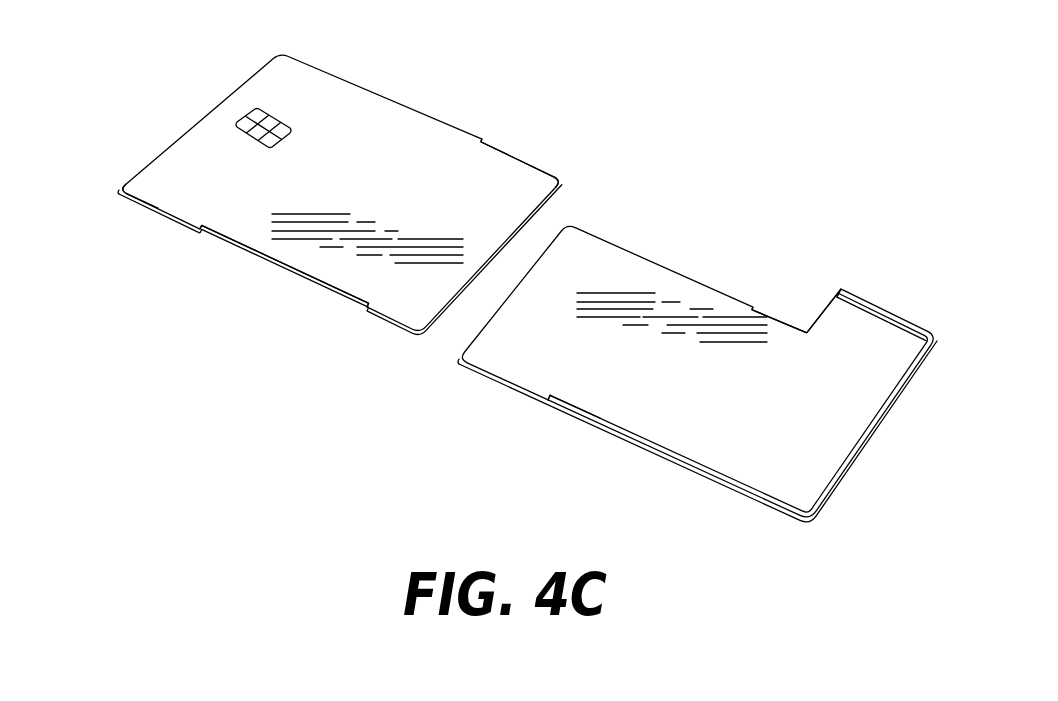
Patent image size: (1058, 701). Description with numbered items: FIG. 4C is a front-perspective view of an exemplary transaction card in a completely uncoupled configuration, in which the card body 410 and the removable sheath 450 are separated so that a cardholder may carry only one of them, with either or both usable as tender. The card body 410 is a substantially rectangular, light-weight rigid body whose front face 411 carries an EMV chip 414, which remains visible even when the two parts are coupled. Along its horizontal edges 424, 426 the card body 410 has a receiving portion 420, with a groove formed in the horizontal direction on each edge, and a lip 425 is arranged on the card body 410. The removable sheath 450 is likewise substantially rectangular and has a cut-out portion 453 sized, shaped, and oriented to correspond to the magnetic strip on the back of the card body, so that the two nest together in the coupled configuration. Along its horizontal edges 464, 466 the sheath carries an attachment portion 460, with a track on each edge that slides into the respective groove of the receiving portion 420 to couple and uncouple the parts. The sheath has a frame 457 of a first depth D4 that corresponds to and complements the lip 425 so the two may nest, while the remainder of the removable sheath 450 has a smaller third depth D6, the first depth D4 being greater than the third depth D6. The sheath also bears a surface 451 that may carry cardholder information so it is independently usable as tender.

The card body 410 is at (310, 170).
The front face 411 is at (379, 190).
The EMV chip 414 is at (278, 122).
The receiving portion 420 is at (384, 190).
The horizontal edge 424 is at (263, 255).
The lip 425 is at (153, 200).
The horizontal edge 426 is at (505, 146).
The removable sheath 450 is at (701, 395).
The second layer surface with indicia 451 is at (781, 388).
The cut-out portion 453 is at (788, 296).
The frame 457 is at (567, 416).
The attachment portion 460 is at (746, 356).
The horizontal edge 464 is at (628, 435).
The horizontal edge 466 is at (865, 299).
The first depth D4 is at (809, 478).
The third depth D6 is at (492, 320).